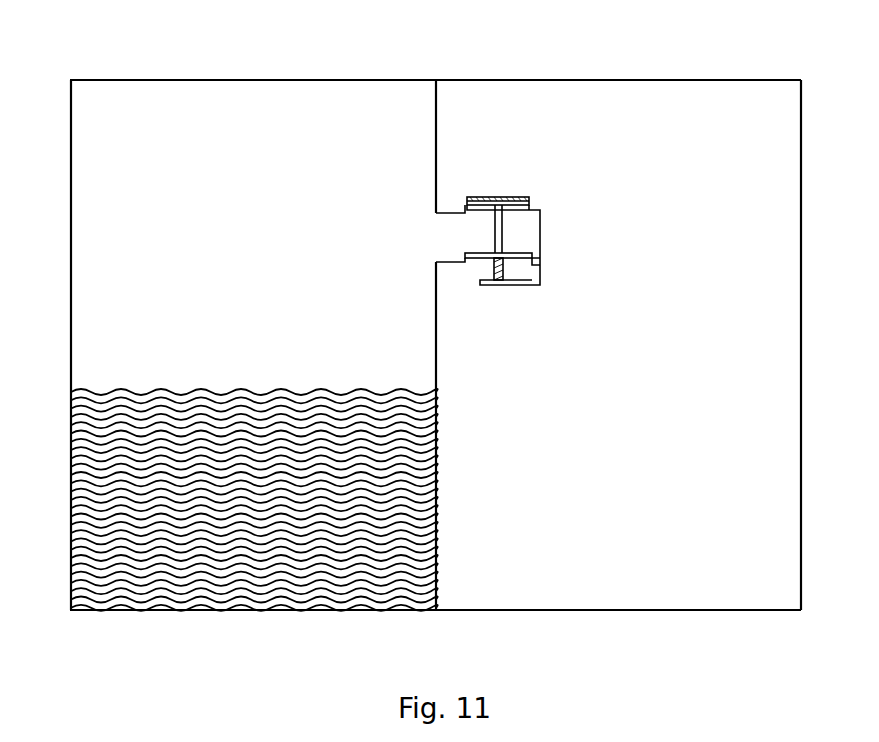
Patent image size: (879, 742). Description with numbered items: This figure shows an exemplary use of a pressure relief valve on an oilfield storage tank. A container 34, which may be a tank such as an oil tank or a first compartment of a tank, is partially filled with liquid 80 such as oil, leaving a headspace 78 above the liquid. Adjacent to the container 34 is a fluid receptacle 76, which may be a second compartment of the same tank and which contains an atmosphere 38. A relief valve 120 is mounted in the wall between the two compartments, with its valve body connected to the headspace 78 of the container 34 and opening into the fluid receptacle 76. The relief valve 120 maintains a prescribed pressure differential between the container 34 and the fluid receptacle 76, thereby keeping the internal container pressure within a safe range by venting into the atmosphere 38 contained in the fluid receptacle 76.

The container 34 is at (263, 78).
The fluid receptacle 76 is at (593, 79).
The headspace 78 is at (87, 256).
The atmosphere 38 is at (753, 250).
The liquid 80 is at (300, 413).
The relief valve 120 is at (570, 204).